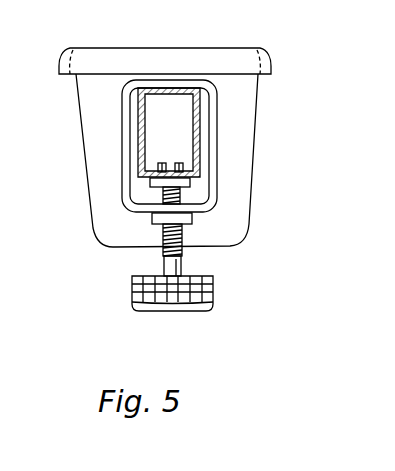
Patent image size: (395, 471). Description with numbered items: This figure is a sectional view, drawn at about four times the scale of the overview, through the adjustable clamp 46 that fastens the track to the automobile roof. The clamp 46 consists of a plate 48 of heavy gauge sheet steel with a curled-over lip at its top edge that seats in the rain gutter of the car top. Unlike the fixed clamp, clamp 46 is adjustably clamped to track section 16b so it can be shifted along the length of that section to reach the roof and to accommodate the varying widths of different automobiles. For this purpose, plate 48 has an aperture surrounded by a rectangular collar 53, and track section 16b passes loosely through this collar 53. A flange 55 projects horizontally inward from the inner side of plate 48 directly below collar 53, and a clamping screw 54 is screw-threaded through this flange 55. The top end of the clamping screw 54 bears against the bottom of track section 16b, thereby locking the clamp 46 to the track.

The clamp 46 is at (278, 44).
The plate 48 is at (240, 102).
The rectangular collar 53 is at (212, 155).
The track section 16b is at (140, 147).
The flange 55 is at (152, 217).
The clamping screw 54 is at (180, 244).